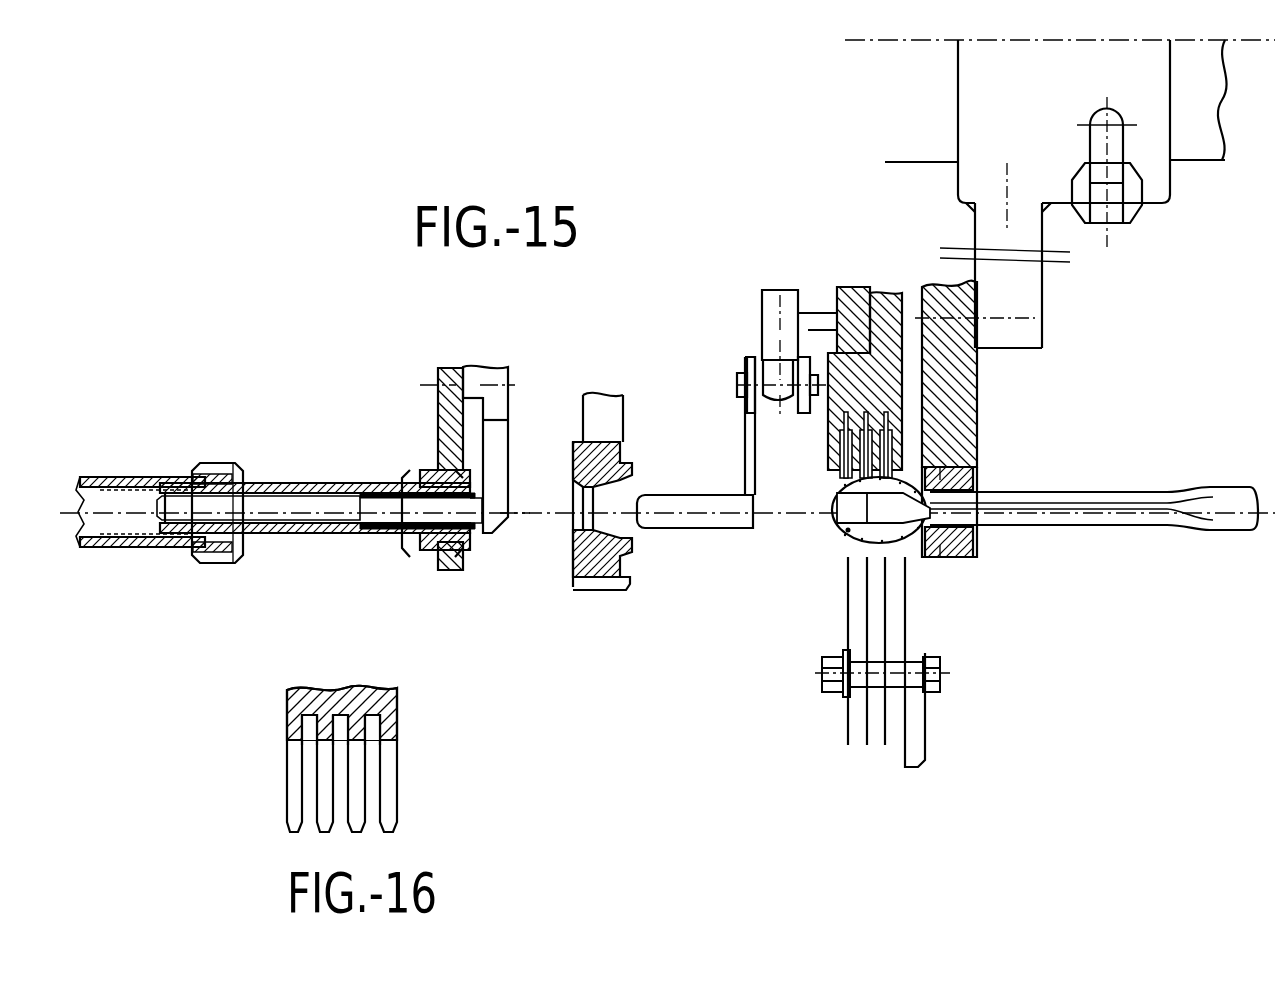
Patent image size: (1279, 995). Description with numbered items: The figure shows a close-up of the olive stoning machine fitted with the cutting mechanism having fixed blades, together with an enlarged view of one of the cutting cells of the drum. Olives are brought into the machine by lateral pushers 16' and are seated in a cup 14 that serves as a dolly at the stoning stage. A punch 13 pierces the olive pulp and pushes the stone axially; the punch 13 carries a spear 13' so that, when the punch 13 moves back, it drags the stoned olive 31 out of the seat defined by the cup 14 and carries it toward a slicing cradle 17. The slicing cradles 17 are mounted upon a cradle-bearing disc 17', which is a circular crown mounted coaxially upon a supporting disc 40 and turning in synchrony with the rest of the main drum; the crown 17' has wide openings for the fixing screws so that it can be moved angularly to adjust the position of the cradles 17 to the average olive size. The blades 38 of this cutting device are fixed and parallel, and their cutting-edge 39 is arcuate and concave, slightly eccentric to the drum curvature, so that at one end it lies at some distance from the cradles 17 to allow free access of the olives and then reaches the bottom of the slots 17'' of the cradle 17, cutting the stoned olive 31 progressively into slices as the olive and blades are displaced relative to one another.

In FIG. 15, the punch 13 is at (1215, 451).
In FIG. 15, the spear 13' is at (1052, 448).
In FIG. 15, the cup 14 is at (575, 587).
In FIG. 15, the lateral pusher 16' is at (695, 540).
In FIG. 15, the slicing cradle 17 is at (982, 419).
In FIG. 15, the cradle-bearing disc 17' is at (970, 320).
In FIG. 16, the cradle-bearing disc 17' is at (422, 724).
In FIG. 15, the slot 17'' is at (978, 414).
In FIG. 16, the slot 17'' is at (463, 771).
In FIG. 15, the stoned olive 31 is at (848, 531).
In FIG. 15, the blade 38 is at (913, 610).
In FIG. 15, the cutting-edge 39 is at (913, 562).
In FIG. 15, the supporting disc 40 is at (855, 300).